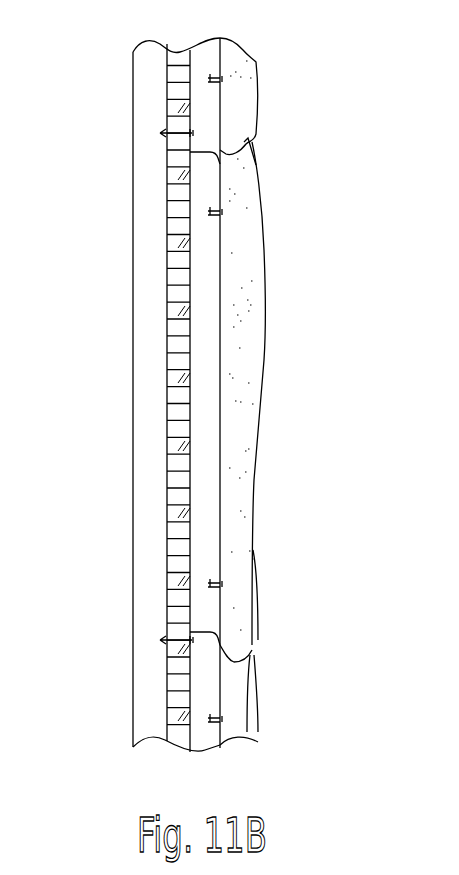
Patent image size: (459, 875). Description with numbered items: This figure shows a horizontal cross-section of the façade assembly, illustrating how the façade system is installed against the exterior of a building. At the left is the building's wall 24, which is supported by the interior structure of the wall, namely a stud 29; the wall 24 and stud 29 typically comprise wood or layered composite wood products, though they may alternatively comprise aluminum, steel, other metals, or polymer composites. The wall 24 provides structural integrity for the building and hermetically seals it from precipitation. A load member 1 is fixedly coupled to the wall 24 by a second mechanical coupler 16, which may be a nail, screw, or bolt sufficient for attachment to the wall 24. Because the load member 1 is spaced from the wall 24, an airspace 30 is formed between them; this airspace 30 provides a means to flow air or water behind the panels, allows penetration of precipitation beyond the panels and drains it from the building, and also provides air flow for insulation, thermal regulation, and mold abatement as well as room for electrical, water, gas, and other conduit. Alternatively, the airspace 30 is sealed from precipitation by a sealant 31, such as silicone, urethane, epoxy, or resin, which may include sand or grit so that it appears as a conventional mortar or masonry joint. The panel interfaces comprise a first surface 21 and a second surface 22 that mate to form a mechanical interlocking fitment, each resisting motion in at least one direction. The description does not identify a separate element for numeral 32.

The load member 1 is at (221, 396).
The second mechanical coupler 16 is at (218, 213).
The first surface 21 is at (308, 132).
The second surface 22 is at (250, 158).
The wall 24 is at (167, 525).
The stud 29 is at (147, 582).
The airspace 30 is at (203, 345).
The sealant 31 is at (258, 657).
The plaster layer 32 is at (250, 332).